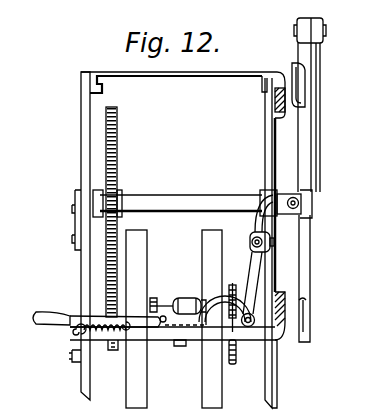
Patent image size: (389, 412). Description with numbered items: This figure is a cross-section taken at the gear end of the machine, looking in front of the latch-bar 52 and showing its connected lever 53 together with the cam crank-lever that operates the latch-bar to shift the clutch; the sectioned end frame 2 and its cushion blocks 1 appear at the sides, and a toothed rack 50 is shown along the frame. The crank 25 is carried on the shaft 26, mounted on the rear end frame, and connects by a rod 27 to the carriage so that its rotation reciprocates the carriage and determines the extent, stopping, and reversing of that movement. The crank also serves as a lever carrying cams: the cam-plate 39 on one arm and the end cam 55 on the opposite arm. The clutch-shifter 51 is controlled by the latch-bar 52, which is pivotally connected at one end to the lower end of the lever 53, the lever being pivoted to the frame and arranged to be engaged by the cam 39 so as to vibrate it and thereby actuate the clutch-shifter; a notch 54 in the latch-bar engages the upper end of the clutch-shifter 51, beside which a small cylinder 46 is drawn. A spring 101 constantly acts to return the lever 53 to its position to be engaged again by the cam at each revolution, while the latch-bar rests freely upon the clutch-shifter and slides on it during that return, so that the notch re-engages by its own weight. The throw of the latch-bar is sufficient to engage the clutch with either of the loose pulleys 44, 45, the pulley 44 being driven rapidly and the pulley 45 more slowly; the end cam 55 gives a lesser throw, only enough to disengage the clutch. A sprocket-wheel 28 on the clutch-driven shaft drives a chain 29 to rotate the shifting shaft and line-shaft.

The frame 2 is at (80, 152).
The rubber cushion blocks 1 is at (273, 101).
The rack 50 is at (119, 167).
The shaft 26 is at (171, 206).
The loose clutch-pulley 45 is at (150, 241).
The loose clutch-pulley 44 is at (208, 241).
The rod 27 is at (323, 117).
The cam 39 is at (312, 86).
The end cam 55 is at (302, 322).
The crank 25 is at (307, 183).
The lever 53 is at (251, 230).
The latch-bar 52 is at (227, 316).
The sprocket-wheel 28 is at (236, 279).
The chain 29 is at (237, 351).
The cylinder 46 is at (196, 299).
The notch 54 is at (163, 315).
The spring 101 is at (98, 342).
The clutch-shifter 51 is at (179, 346).